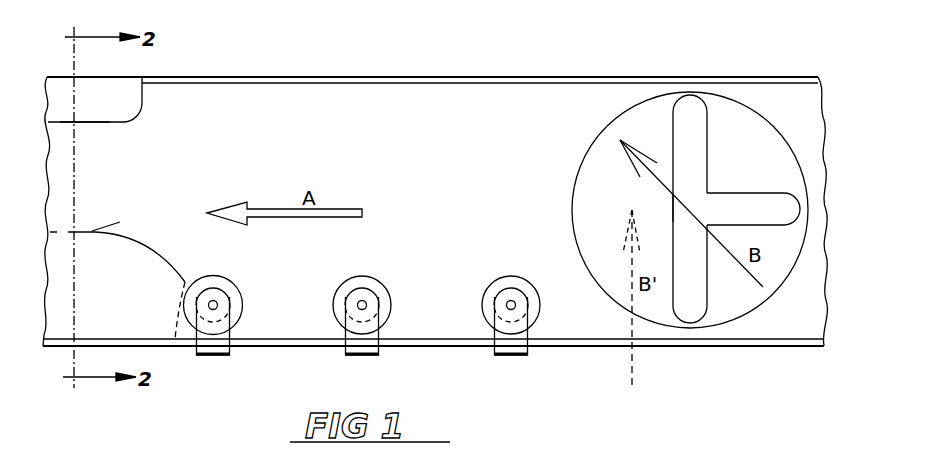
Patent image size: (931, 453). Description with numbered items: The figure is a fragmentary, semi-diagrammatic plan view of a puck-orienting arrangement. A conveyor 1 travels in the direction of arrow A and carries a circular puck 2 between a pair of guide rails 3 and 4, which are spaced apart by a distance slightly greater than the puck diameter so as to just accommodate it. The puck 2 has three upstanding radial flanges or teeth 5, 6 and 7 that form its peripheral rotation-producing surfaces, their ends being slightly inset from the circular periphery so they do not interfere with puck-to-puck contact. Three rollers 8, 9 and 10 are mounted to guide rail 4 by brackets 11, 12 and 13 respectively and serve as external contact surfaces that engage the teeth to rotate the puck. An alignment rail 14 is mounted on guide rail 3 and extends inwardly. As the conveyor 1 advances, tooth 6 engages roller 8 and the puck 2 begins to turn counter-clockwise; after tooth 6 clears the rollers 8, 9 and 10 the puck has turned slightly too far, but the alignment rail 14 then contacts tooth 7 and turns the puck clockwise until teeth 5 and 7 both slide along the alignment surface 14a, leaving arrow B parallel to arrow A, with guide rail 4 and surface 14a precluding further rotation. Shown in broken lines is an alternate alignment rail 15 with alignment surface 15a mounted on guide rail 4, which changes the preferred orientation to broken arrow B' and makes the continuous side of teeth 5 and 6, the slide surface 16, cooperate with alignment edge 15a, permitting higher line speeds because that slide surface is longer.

The conveyor 1 is at (455, 102).
The circular puck 2 is at (647, 110).
The guide rail 3 is at (538, 78).
The guide rail 4 is at (770, 347).
The tooth 5 is at (690, 147).
The tooth 6 is at (690, 261).
The tooth 7 is at (753, 209).
The roller 8 is at (527, 279).
The roller 9 is at (378, 280).
The roller 10 is at (228, 278).
The bracket 11 is at (507, 356).
The bracket 12 is at (362, 356).
The bracket 13 is at (214, 356).
The alignment rail 14 is at (118, 110).
The alignment surface 14a is at (84, 122).
The alignment rail 15 is at (122, 257).
The alignment surface 15a is at (92, 231).
The slide surface 16 is at (673, 208).